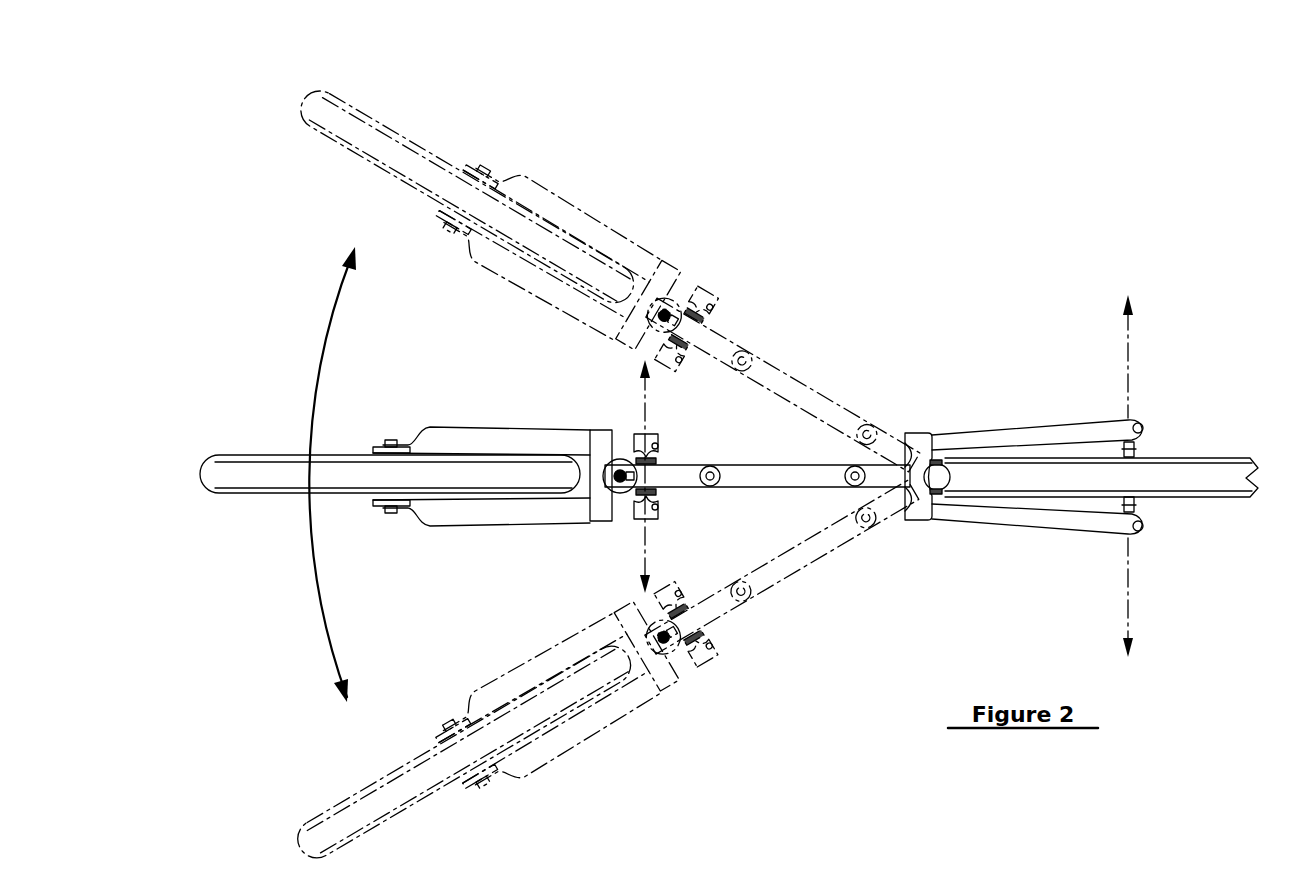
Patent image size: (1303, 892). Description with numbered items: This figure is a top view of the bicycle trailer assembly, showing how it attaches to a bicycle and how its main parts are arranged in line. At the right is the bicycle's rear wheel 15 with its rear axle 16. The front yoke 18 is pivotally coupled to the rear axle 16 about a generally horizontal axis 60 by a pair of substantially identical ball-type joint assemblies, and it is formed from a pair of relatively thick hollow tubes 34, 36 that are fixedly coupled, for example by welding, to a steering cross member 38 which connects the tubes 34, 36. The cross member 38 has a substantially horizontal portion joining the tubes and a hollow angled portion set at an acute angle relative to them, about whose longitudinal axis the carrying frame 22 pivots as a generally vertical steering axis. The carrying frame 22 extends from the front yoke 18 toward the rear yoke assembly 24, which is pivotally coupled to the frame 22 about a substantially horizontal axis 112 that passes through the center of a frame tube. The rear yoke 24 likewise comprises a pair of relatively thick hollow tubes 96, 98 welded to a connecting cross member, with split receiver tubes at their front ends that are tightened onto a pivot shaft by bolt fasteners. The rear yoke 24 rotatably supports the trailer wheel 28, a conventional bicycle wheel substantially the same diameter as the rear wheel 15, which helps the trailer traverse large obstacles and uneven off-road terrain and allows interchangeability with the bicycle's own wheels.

The rear wheel 15 is at (1203, 478).
The rear axle 16 is at (1140, 510).
The front yoke 18 is at (1120, 412).
The carrying frame 22 is at (757, 465).
The rear yoke assembly 24 is at (452, 420).
The trailer wheel 28 is at (258, 476).
The tube 34 is at (1025, 516).
The tube 36 is at (1030, 435).
The steering cross member 38 is at (934, 432).
The horizontal axis 60 is at (1130, 357).
The tube 96 is at (505, 522).
The tube 98 is at (512, 430).
The horizontal axis 112 is at (640, 405).